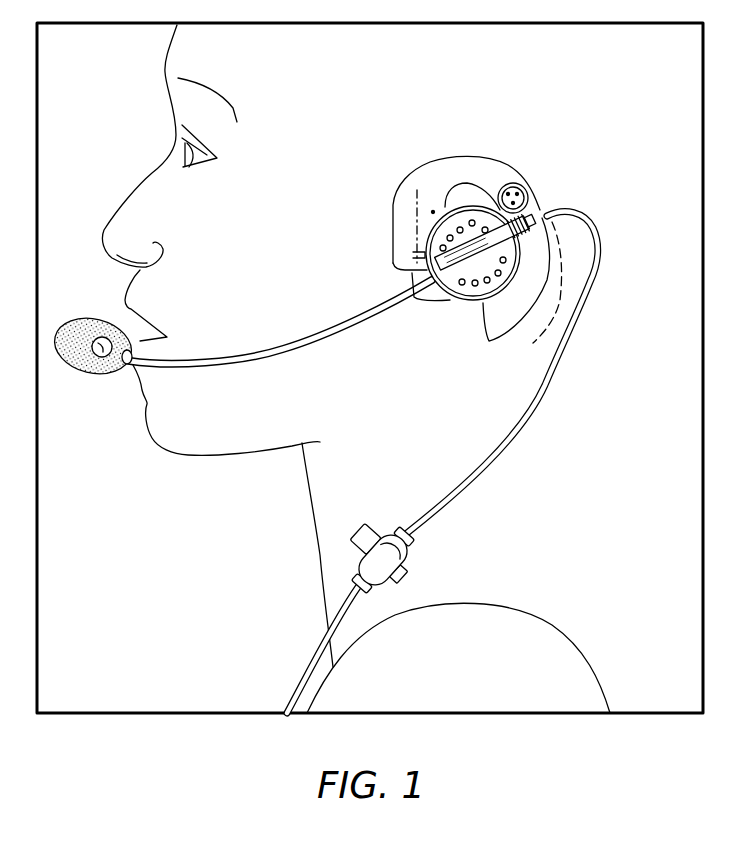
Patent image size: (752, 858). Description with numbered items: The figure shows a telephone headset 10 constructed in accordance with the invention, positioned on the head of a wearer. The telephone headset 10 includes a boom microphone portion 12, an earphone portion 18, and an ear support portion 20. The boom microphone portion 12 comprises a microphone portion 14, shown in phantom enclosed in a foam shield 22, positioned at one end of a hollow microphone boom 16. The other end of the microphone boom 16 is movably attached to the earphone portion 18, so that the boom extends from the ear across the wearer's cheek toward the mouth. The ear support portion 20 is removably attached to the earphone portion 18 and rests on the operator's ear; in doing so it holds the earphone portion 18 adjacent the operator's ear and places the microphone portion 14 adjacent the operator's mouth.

The telephone headset 10 is at (543, 153).
The boom microphone portion 12 is at (294, 275).
The microphone portion 14 is at (102, 337).
The microphone boom 16 is at (287, 343).
The earphone portion 18 is at (458, 308).
The ear support portion 20 is at (465, 157).
The foam shield 22 is at (92, 373).